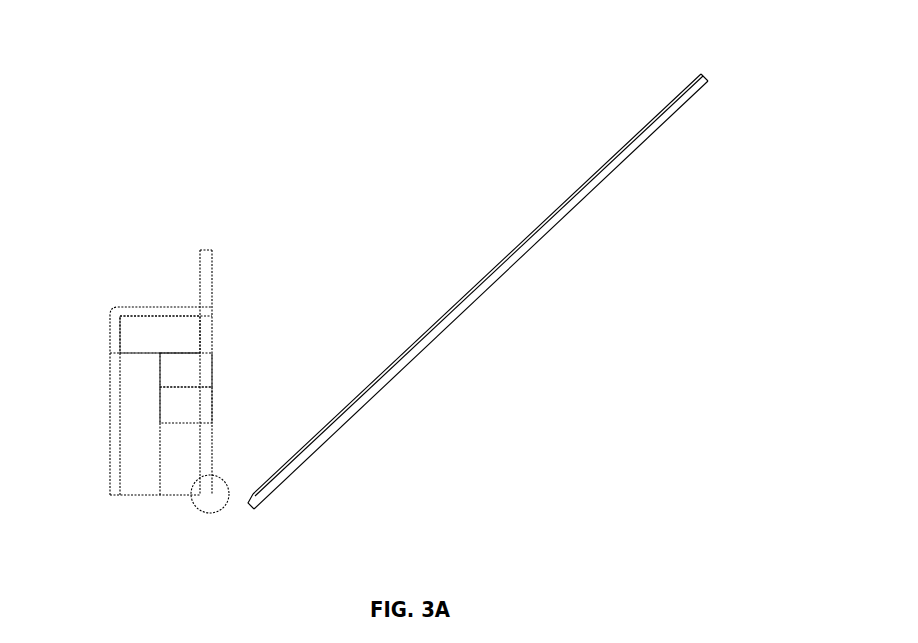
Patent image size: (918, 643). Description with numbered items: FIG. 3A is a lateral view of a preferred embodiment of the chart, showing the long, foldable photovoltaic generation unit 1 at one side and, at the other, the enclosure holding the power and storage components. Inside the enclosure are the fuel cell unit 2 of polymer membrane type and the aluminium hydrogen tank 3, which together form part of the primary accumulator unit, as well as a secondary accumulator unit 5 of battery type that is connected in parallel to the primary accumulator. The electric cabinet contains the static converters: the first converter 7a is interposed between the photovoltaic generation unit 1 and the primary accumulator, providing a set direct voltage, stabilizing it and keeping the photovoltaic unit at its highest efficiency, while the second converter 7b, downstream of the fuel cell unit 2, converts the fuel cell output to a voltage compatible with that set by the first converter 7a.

The photovoltaic generation unit 1 is at (647, 142).
The fuel cell unit 2 is at (152, 325).
The tank 3 is at (123, 423).
The secondary accumulator unit 5 is at (192, 438).
The first converter 7a is at (192, 367).
The second converter 7b is at (192, 410).